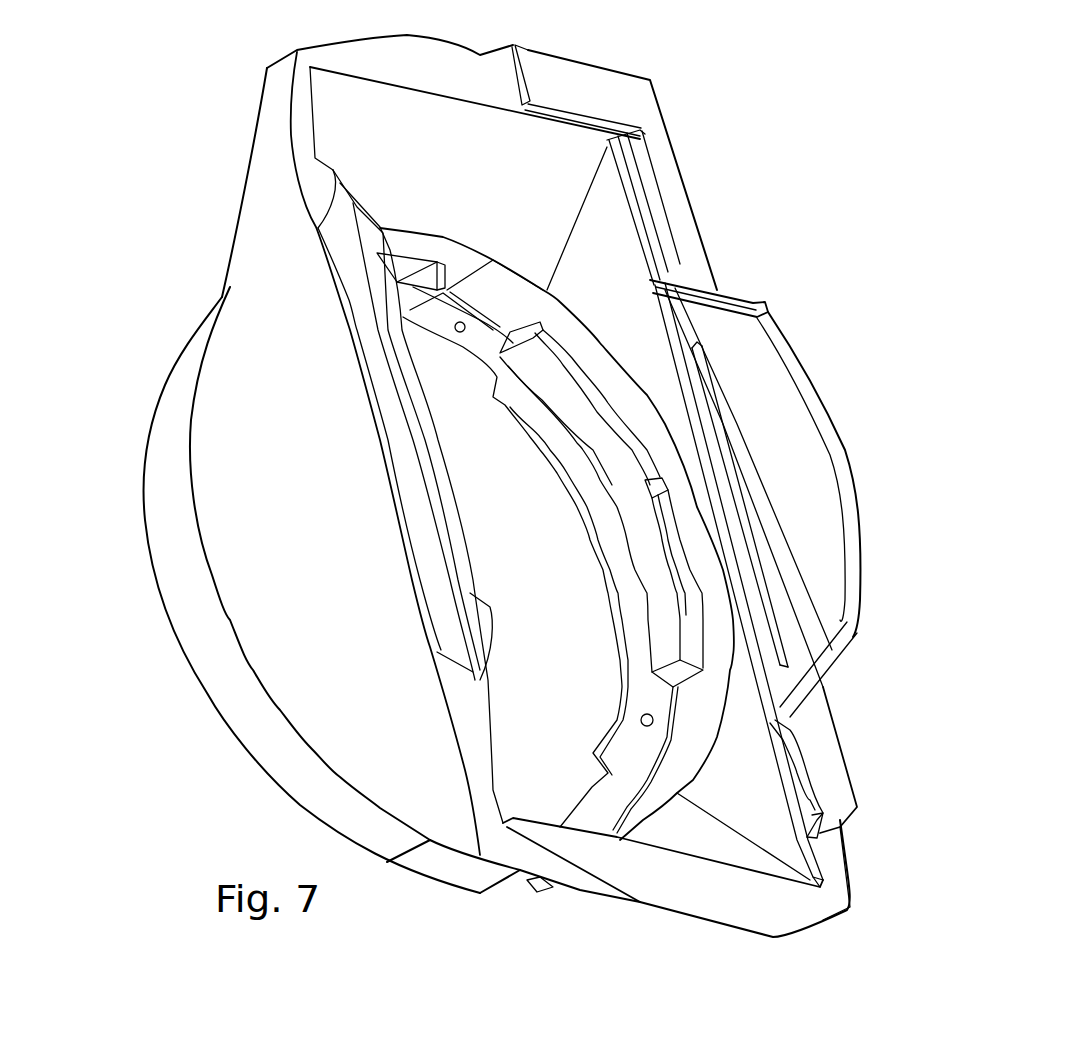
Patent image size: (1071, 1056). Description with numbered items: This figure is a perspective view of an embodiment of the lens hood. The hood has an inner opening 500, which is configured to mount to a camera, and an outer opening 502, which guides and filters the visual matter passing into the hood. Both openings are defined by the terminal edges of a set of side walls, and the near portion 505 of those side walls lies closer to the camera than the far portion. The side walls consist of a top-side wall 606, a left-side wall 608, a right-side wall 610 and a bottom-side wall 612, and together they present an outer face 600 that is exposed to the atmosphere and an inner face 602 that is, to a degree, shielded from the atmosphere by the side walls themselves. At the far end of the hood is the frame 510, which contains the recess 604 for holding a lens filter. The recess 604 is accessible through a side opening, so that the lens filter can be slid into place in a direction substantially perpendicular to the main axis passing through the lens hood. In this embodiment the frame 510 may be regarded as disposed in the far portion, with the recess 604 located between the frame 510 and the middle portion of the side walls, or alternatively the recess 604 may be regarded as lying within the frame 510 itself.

The inner opening 500 is at (587, 527).
The outer opening 502 is at (672, 256).
The near portion 505 is at (190, 589).
The frame 510 is at (555, 92).
The outer face 600 is at (433, 143).
The inner face 602 is at (282, 335).
The recess 604 is at (520, 97).
The top-side wall 606 is at (740, 793).
The left-side wall 608 is at (523, 200).
The right-side wall 610 is at (690, 833).
The bottom-side wall 612 is at (300, 492).